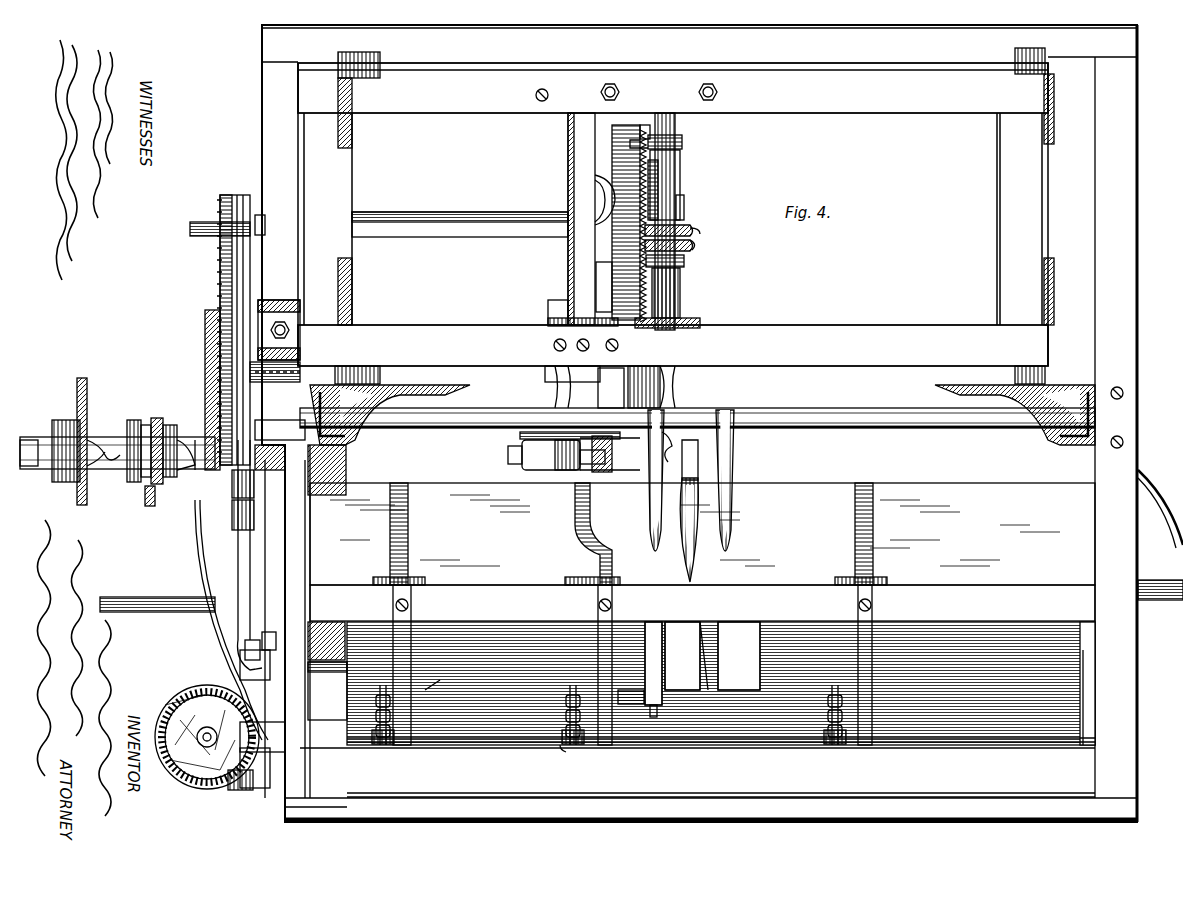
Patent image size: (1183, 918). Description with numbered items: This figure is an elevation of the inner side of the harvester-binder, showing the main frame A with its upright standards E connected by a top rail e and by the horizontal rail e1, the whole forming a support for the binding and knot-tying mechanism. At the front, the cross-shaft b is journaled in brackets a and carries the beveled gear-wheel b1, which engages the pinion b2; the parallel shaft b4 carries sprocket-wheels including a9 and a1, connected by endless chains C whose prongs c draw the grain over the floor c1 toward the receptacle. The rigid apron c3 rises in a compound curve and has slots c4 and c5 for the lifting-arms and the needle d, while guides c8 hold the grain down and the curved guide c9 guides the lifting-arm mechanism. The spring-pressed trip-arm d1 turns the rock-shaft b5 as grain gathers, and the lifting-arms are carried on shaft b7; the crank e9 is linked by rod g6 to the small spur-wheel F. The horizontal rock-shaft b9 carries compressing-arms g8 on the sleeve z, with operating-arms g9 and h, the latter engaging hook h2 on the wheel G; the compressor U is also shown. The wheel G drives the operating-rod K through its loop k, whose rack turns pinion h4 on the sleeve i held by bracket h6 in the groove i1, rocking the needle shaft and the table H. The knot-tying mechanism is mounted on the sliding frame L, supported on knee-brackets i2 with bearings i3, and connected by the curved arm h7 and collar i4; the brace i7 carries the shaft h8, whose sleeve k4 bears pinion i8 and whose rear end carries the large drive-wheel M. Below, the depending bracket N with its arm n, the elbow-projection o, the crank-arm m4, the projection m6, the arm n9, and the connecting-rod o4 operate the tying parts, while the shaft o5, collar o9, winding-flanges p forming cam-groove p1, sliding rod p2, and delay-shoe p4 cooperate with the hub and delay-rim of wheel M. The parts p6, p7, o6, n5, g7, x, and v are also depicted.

The upright posts or standards E is at (262, 122).
The top rail e is at (699, 40).
The longitudinally-sliding frame L is at (673, 214).
The bearings i3 is at (340, 80).
The knee-brackets i2 is at (960, 392).
The shaft h8 is at (465, 238).
The upright brace i7 is at (591, 219).
The large drive-wheel M is at (622, 178).
The crank-arm m4 is at (600, 278).
The elbow-projection o is at (556, 304).
The winding-flanges p is at (686, 250).
The delay-shoe p4 is at (652, 132).
The shaft o5 is at (670, 192).
The pin p6 is at (672, 210).
The collar o9 is at (693, 228).
The cam-groove p1 is at (692, 240).
The sliding rod p2 is at (676, 292).
The connecting-rod o4 is at (690, 320).
The depending bracket N is at (552, 392).
The shoulder or projection m6 is at (596, 404).
The block p7 is at (644, 387).
The sleeve z is at (680, 410).
The horizontal rock-shaft b9 is at (782, 408).
The compressing-arms g8 is at (732, 466).
The compressor U is at (698, 511).
The hook o6 is at (675, 447).
The horizontal arm n9 is at (535, 438).
The outwardly-extending arm n is at (544, 455).
The lug n5 is at (560, 470).
The bracket g7 is at (602, 461).
The guides c8 is at (404, 545).
The horizontal rail e1 is at (346, 486).
The frame A is at (680, 629).
The prongs or teeth c is at (721, 683).
The curved guide c9 is at (1086, 650).
The elongated transverse slot c4 is at (658, 677).
The rigid apron c3 is at (737, 673).
The elongated transverse slot c5 is at (686, 656).
The needle d is at (739, 656).
The spring-pressed trip-arm d1 is at (650, 660).
The shaft b7 is at (326, 712).
The rock-shaft b5 is at (276, 648).
The floor or reaper-platform c1 is at (721, 809).
The shaft b4 is at (498, 752).
The sprocket-wheel a9 is at (378, 750).
The endless chains C is at (613, 756).
The sprocket-wheel a1 is at (280, 645).
The brackets a is at (270, 780).
The crank e9 is at (240, 788).
The table H is at (34, 436).
The pinion h4 is at (70, 480).
The bracket h6 is at (52, 472).
The sleeve i is at (120, 472).
The operating-rod K is at (205, 412).
The groove i1 is at (150, 450).
The hook h2 is at (155, 494).
The wheel G is at (220, 283).
The pinion i8 is at (240, 206).
The sleeve k4 is at (262, 215).
The operating-arm g9 is at (258, 400).
The small spur-wheel F is at (252, 390).
The operating-arm h is at (262, 470).
The lever x is at (232, 514).
The rod g6 is at (195, 578).
The link v is at (255, 649).
The beveled gear-wheel b1 is at (205, 690).
The cross-shaft b is at (198, 735).
The pinion b2 is at (240, 735).
The curved arm h7 is at (1150, 482).
The collar i4 is at (1170, 602).
The elongated loop k is at (238, 491).